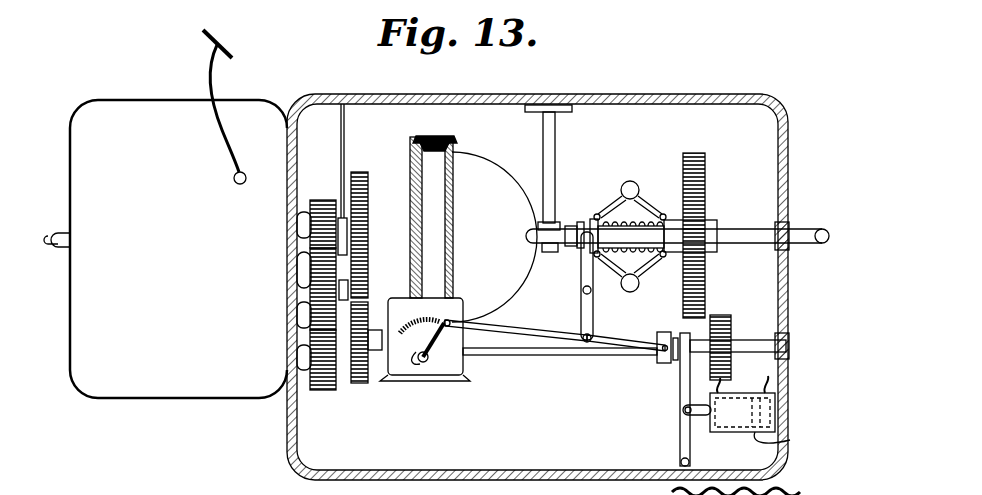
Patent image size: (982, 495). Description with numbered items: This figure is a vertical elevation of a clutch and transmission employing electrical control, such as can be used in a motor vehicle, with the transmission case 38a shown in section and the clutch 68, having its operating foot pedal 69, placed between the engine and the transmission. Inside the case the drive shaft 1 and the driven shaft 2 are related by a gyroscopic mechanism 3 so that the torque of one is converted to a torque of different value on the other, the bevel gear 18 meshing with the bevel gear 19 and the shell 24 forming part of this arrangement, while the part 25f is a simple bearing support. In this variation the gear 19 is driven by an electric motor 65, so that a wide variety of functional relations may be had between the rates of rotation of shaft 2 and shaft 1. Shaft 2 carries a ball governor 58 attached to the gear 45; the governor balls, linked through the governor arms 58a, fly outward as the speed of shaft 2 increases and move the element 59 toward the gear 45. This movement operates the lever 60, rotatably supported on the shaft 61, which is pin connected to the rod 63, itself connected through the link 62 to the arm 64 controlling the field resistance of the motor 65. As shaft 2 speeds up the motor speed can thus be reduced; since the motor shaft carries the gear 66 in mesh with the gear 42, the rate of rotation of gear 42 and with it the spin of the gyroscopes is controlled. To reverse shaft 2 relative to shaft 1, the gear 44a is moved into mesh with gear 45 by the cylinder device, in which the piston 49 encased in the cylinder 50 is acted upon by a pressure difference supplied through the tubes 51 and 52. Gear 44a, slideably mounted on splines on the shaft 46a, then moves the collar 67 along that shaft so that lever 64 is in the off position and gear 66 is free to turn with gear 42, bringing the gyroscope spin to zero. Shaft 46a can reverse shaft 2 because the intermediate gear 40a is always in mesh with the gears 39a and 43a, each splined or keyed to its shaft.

The drive shaft 1 is at (292, 238).
The driven shaft 2 is at (802, 228).
The gyroscopic mechanism 3 is at (498, 168).
The bevel gear 18 is at (446, 142).
The bevel gear 19 is at (422, 198).
The shell 24 is at (454, 250).
The bearing support 25f is at (345, 142).
The transmission case 38a is at (788, 298).
The gear 39a is at (296, 212).
The intermediate gear 40a is at (295, 297).
The gear 42 is at (369, 212).
The gear 43a is at (328, 392).
The gear 44a is at (724, 316).
The gear 45 is at (705, 162).
The shaft 46a is at (540, 356).
The piston 49 is at (787, 436).
The cylinder 50 is at (776, 400).
The tube 51 is at (722, 388).
The tube 52 is at (770, 382).
The ball governor 58 is at (626, 182).
The governor spring 58a is at (636, 212).
The element 59 is at (580, 220).
The lever 60 is at (578, 266).
The shaft 61 is at (594, 292).
The link 62 is at (600, 334).
The rod 63 is at (620, 354).
The arm 64 is at (466, 368).
The electric motor 65 is at (407, 372).
The gear 66 is at (366, 385).
The collar 67 is at (660, 366).
The clutch 68 is at (167, 387).
The foot pedal 69 is at (208, 82).